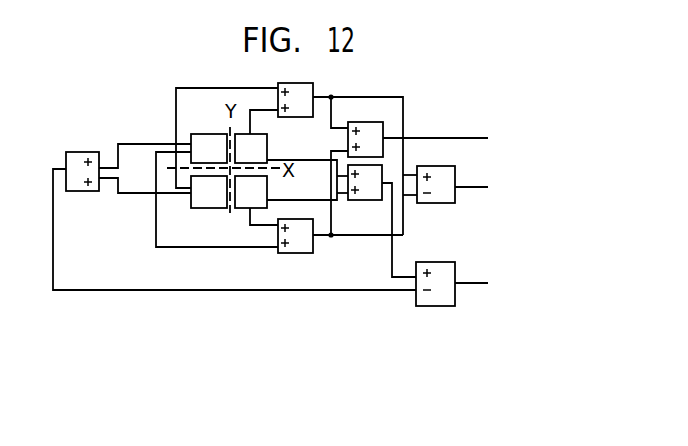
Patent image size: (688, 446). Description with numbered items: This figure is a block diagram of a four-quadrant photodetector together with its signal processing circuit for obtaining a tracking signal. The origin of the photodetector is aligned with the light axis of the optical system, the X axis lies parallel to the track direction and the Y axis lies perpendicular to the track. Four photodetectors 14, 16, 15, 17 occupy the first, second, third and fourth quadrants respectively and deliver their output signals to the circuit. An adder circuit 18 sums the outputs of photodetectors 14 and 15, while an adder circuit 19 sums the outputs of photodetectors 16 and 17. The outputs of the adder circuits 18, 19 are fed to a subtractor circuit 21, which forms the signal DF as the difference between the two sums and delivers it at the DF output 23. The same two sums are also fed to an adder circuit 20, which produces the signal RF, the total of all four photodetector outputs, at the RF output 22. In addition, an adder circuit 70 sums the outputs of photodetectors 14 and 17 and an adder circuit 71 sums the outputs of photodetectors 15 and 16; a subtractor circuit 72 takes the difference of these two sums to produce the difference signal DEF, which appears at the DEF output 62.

The adder circuit 71 is at (75, 152).
The photodetector 16 is at (212, 134).
The photodetector 14 is at (267, 143).
The photodetector 15 is at (196, 208).
The photodetector 17 is at (246, 208).
The adder circuit 18 is at (297, 83).
The adder circuit 19 is at (300, 253).
The adder circuit 20 is at (370, 122).
The adder circuit 70 is at (349, 200).
The subtractor circuit 21 is at (440, 203).
The subtractor circuit 72 is at (433, 262).
The RF signal output 22 is at (476, 137).
The DF signal output 23 is at (513, 185).
The DEF signal output 62 is at (520, 284).